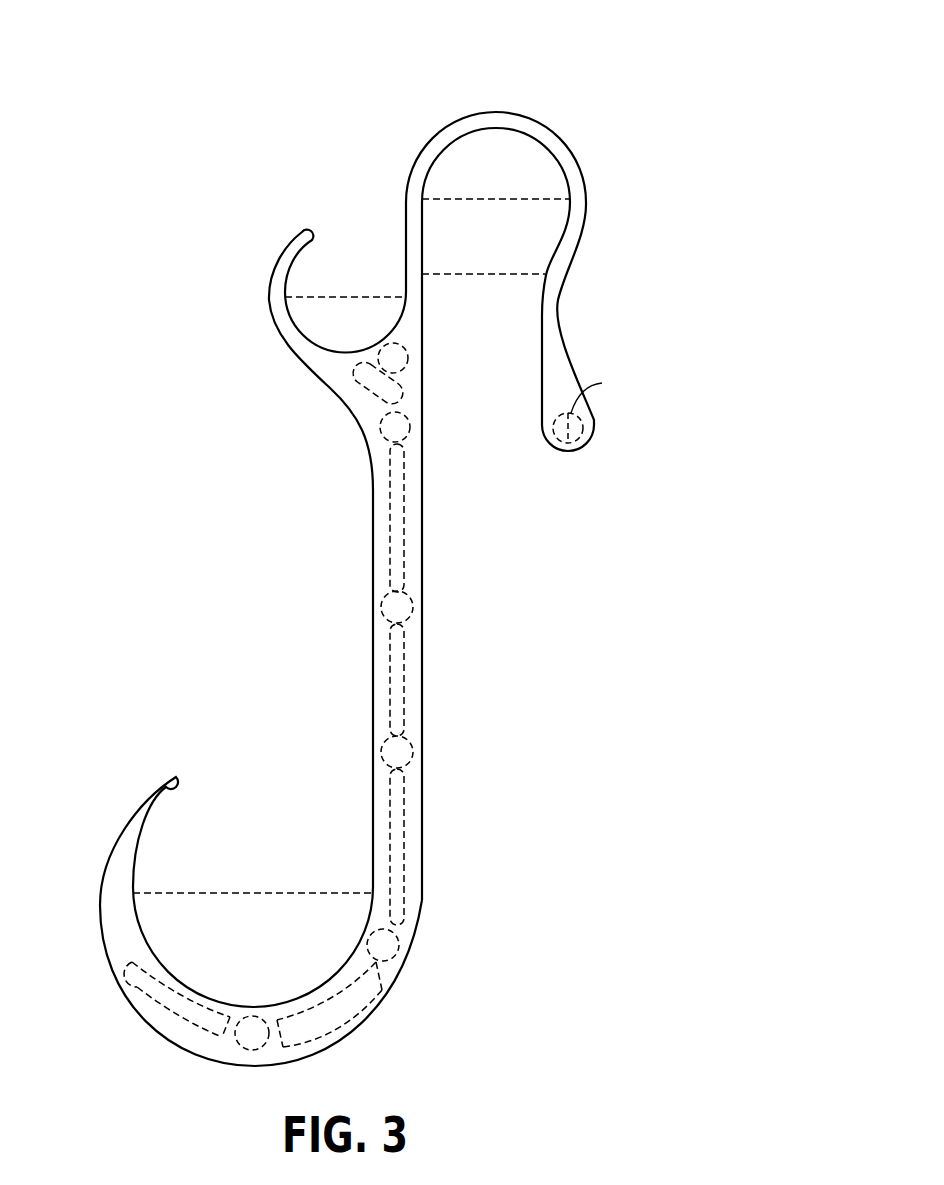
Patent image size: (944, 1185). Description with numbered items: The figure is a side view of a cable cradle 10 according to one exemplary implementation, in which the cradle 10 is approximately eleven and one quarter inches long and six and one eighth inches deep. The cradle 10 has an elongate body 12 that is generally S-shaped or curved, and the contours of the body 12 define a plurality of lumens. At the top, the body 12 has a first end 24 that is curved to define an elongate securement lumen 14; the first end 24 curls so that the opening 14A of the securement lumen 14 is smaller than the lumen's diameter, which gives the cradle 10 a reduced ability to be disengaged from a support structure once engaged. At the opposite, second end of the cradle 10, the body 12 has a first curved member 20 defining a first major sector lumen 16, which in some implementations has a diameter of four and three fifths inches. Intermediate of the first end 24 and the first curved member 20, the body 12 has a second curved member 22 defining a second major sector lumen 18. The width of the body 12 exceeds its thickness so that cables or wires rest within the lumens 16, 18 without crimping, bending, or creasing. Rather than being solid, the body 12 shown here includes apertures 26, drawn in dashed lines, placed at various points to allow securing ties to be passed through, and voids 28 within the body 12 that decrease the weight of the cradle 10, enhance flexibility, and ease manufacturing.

The cradle 10 is at (543, 87).
The elongate body 12 is at (422, 707).
The elongate securement lumen 14 is at (493, 307).
The opening of the elongate securement lumen 14A is at (483, 289).
The first major sector lumen 16 is at (262, 857).
The second major sector lumen 18 is at (370, 262).
The first curved member 20 is at (82, 887).
The second curved member 22 is at (248, 297).
The first end 24 is at (606, 212).
The apertures 26 is at (570, 440).
The voids 28 is at (363, 993).